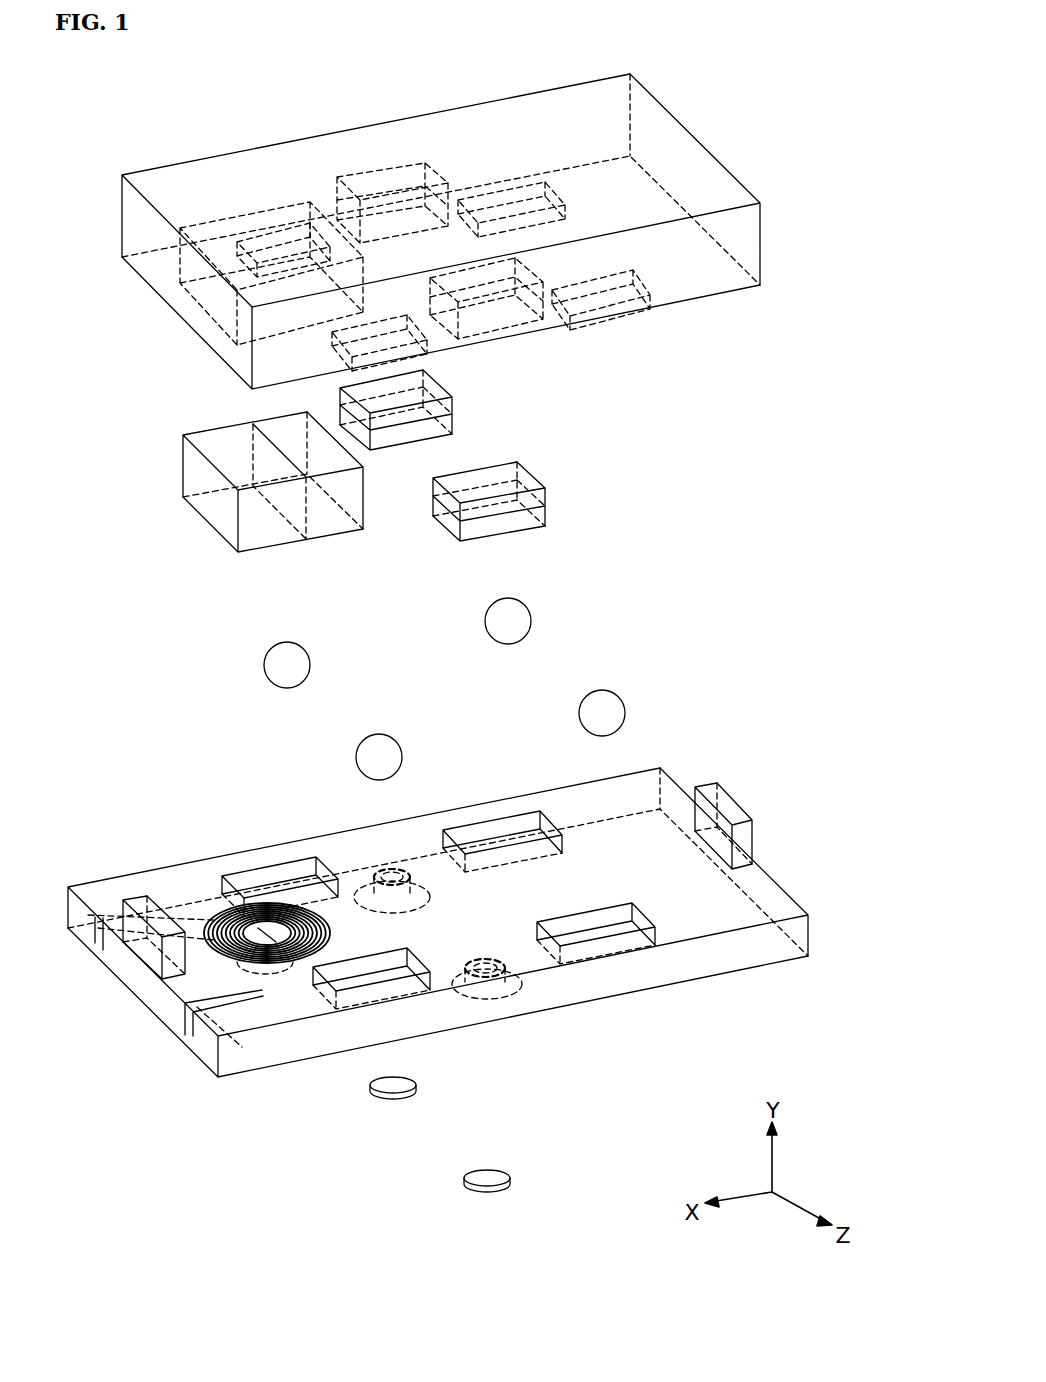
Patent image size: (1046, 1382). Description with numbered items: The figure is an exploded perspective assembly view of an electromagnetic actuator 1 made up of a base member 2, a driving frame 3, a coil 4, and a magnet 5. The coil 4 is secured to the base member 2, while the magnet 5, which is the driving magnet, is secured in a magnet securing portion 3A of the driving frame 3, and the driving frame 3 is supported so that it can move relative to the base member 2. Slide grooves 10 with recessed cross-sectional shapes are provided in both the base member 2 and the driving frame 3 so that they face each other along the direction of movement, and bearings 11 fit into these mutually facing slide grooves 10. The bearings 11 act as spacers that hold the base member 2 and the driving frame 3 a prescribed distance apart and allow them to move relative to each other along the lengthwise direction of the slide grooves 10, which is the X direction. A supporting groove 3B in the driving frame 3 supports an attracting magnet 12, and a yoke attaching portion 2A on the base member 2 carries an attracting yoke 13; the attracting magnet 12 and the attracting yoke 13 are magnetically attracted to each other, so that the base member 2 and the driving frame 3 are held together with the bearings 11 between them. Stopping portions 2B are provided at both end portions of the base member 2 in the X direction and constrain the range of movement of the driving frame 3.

The electromagnetic actuator 1 is at (822, 350).
The base member 2 is at (812, 940).
The yoke attaching portion 2A is at (347, 913).
The stopping portion 2B is at (143, 897).
The driving frame 3 is at (690, 133).
The magnet securing portion 3A is at (182, 323).
The supporting groove 3B is at (393, 175).
The coil 4 is at (216, 928).
The magnet 5 is at (181, 465).
The slide groove 10 is at (277, 230).
The bearing 11 is at (530, 610).
The attracting magnet 12 is at (455, 418).
The attracting yoke 13 is at (390, 1103).